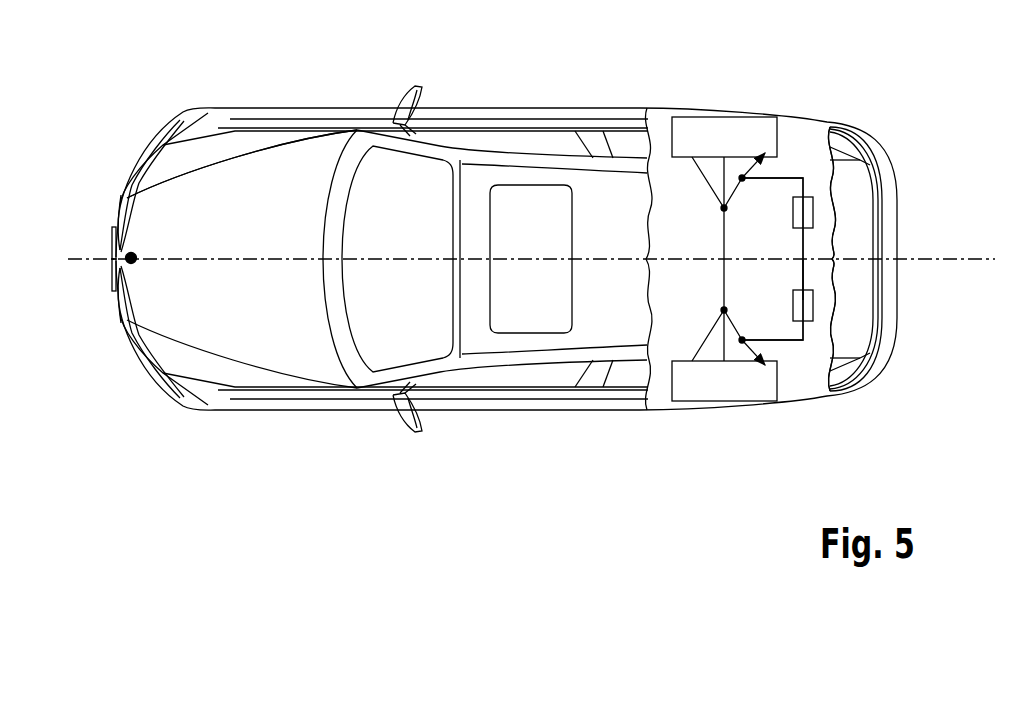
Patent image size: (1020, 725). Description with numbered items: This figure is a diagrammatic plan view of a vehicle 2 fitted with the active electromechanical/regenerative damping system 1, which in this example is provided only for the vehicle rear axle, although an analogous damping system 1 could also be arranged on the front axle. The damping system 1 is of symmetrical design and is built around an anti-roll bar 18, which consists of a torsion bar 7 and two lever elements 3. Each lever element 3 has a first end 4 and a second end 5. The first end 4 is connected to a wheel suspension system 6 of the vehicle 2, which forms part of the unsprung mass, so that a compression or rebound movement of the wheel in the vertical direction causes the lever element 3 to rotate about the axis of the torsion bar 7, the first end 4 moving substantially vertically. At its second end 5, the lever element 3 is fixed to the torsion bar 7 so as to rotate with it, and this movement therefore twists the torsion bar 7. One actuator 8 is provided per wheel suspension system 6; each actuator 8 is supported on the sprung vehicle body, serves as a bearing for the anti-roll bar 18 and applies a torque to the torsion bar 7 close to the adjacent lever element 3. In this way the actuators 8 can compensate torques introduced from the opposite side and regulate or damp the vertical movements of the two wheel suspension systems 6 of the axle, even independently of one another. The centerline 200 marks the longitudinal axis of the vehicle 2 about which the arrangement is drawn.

The damping system 1 is at (880, 108).
The vehicle 2 is at (200, 76).
The lever element 3 is at (784, 177).
The first end 4 is at (761, 150).
The second end 5 is at (808, 164).
The wheel suspension system 6 is at (697, 128).
The torsion bar 7 is at (803, 245).
The actuator 8 is at (813, 212).
The anti-roll bar 18 is at (812, 277).
The longitudinal axis 200 is at (80, 261).